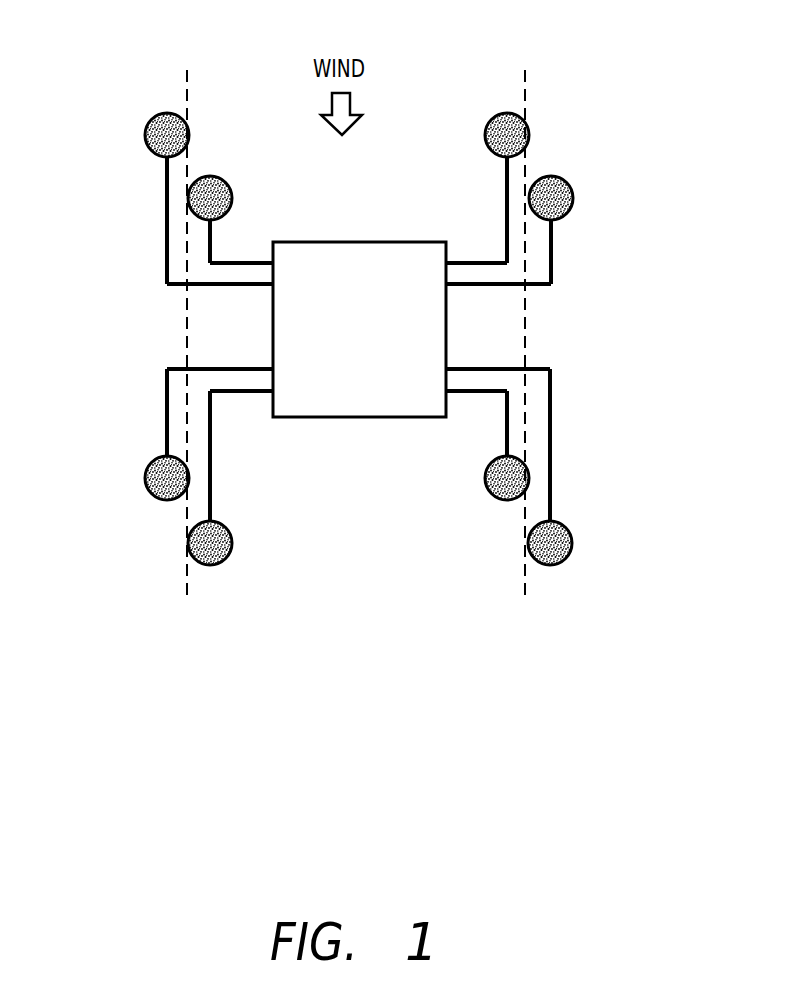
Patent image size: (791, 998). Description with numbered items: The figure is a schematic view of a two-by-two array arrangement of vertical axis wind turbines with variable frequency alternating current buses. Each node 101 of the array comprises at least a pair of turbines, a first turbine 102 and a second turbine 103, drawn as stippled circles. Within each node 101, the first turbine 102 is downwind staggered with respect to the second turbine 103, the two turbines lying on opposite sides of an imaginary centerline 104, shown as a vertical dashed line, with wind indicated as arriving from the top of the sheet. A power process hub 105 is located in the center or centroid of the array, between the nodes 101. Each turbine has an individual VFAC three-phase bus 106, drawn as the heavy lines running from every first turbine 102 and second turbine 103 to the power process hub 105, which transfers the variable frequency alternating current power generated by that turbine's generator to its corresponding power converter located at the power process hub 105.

The node 101 is at (246, 150).
The first turbine 102 is at (148, 153).
The second turbine 103 is at (230, 185).
The imaginary centerline 104 is at (188, 77).
The power process hub 105 is at (360, 242).
The VFAC 3-phase bus 106 is at (232, 265).